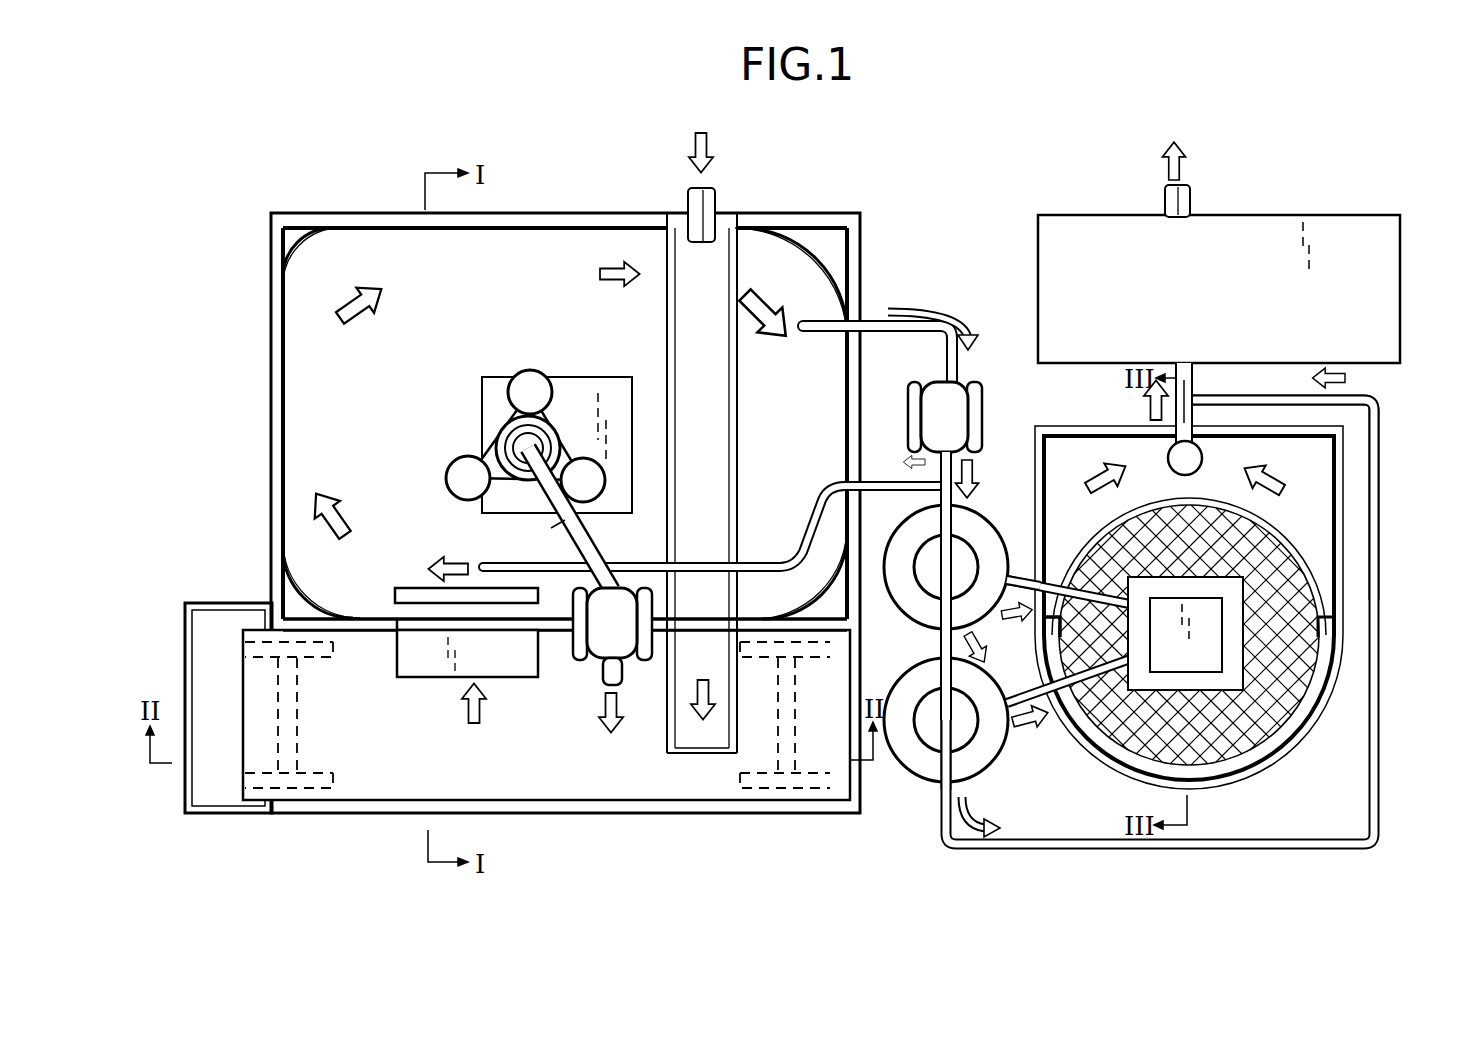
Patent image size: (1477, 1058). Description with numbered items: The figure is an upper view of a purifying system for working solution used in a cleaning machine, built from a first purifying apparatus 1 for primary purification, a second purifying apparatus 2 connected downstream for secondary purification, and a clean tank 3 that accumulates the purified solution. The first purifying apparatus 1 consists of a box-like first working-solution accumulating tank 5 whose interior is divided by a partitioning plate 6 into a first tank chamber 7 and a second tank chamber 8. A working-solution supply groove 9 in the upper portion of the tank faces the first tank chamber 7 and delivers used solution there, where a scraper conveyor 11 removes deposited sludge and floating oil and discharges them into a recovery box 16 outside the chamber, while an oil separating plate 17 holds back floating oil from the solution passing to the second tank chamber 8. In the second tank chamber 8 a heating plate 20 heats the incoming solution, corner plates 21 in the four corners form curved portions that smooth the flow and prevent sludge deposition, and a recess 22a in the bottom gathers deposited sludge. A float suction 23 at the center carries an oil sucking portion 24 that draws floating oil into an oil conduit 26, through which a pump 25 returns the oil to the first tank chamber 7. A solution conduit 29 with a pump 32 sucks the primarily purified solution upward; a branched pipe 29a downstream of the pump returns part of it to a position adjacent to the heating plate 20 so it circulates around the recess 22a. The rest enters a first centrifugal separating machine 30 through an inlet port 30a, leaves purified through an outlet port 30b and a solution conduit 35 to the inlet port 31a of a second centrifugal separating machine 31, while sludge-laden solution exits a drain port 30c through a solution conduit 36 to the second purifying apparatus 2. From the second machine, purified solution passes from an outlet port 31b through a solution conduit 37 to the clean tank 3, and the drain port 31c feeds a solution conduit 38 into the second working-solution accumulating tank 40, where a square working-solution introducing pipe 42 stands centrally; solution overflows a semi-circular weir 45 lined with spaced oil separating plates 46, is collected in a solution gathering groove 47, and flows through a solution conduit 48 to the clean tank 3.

The first purifying apparatus 1 is at (552, 183).
The second purifying apparatus 2 is at (1323, 800).
The clean tank 3 is at (1303, 215).
The first working-solution accumulating tank 5 is at (271, 362).
The partitioning plate 6 is at (374, 618).
The first tank chamber 7 is at (591, 780).
The second tank chamber 8 is at (521, 268).
The working-solution supply groove 9 is at (718, 270).
The scraper conveyor 11 is at (243, 686).
The recovery box 16 is at (232, 603).
The oil separating plate 17 is at (517, 680).
The heating plate 20 is at (407, 588).
The corner plates 21 is at (318, 262).
The recess 22a is at (598, 393).
The float suction 23 is at (462, 428).
The oil sucking portion 24 is at (558, 415).
The pump 25 is at (620, 600).
The oil conduit 26 is at (548, 531).
The solution conduit 29 is at (875, 326).
The branched pipe 29a is at (770, 560).
The first centrifugal separating machine 30 is at (997, 530).
The inlet port 30a is at (940, 507).
The outlet port 30b is at (932, 548).
The drain port 30c is at (1010, 570).
The second centrifugal separating machine 31 is at (890, 760).
The inlet port 31a is at (936, 650).
The outlet port 31b is at (943, 735).
The drain port 31c is at (1018, 720).
The pump 32 is at (982, 385).
The solution conduit 35 is at (1012, 610).
The solution conduit 36 is at (1112, 670).
The solution conduit 37 is at (1173, 848).
The solution conduit 38 is at (1067, 725).
The second working-solution accumulating tank 40 is at (1337, 668).
The working-solution introducing pipe 42 is at (1240, 588).
The weir 45 is at (1293, 530).
The oil separating plates 46 is at (1327, 608).
The solution gathering groove 47 is at (1310, 476).
The solution conduit 48 is at (1175, 407).